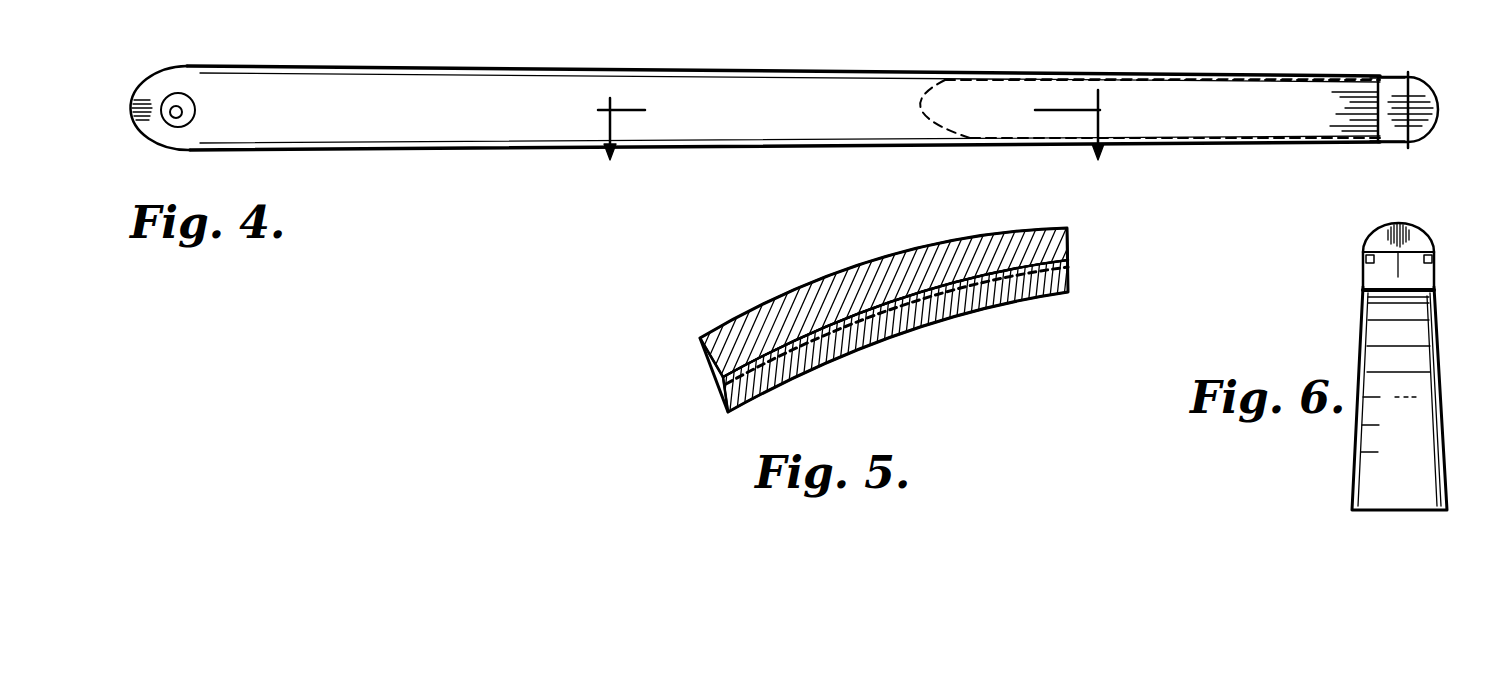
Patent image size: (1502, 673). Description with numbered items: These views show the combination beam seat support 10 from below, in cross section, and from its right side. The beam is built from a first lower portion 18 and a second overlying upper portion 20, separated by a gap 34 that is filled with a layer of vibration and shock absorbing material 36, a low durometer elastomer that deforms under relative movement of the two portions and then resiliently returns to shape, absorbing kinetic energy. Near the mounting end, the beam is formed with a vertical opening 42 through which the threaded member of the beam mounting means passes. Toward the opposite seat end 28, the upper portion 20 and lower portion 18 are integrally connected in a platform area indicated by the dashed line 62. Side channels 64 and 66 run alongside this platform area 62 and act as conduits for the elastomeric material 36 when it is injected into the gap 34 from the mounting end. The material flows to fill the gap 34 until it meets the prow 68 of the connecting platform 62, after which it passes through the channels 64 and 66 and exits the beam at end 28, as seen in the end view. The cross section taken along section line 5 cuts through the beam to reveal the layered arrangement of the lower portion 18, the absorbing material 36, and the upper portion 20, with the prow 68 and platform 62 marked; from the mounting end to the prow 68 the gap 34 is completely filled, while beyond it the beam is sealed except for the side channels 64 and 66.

In FIG. 4, the section line 5— 5 is at (590, 108).
In FIG. 5, the combination beam seat support 10 is at (838, 262).
In FIG. 4, the first lower portion 18 is at (508, 140).
In FIG. 5, the first lower portion 18 is at (993, 300).
In FIG. 6, the first lower portion 18 is at (1432, 368).
In FIG. 5, the second overlying upper portion 20 is at (1000, 232).
In FIG. 4, the beam end 28 is at (1362, 77).
In FIG. 6, the beam end 28 is at (1411, 229).
In FIG. 4, the gap 34 is at (76, 6).
In FIG. 5, the gap 34 is at (728, 400).
In FIG. 4, the vibration and shock absorbing material 36 is at (410, 6).
In FIG. 5, the vibration and shock absorbing material 36 is at (715, 380).
In FIG. 4, the vertical opening 42 is at (163, 122).
In FIG. 4, the beam connecting platform 62 is at (1018, 72).
In FIG. 5, the beam connecting platform 62 is at (1070, 259).
In FIG. 4, the side channel 64 is at (1157, 75).
In FIG. 6, the side channel 64 is at (1363, 258).
In FIG. 4, the side channel 66 is at (1407, 76).
In FIG. 6, the side channel 66 is at (1436, 258).
In FIG. 4, the prow 68 is at (917, 72).
In FIG. 5, the prow 68 is at (923, 288).